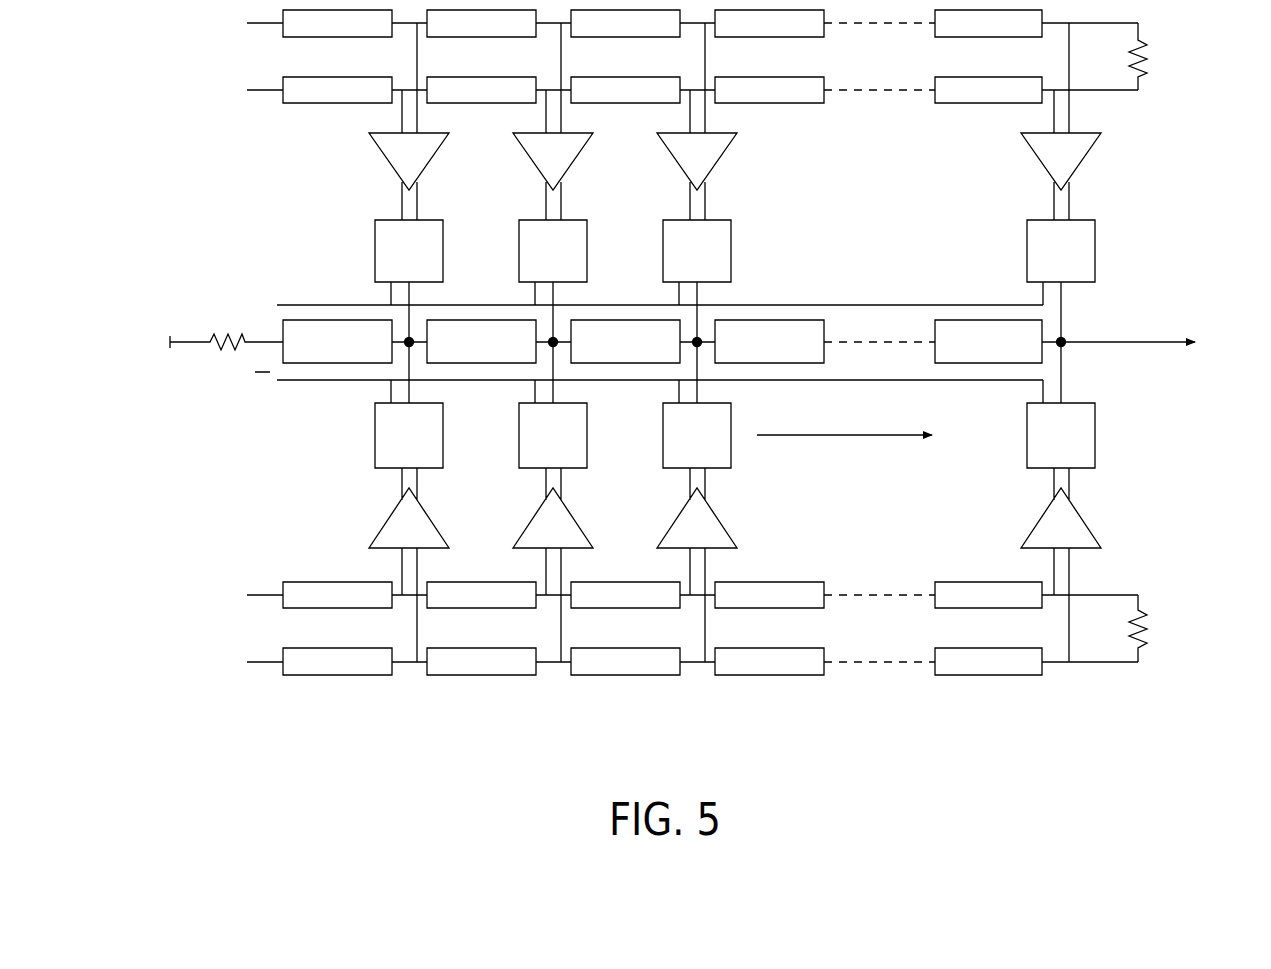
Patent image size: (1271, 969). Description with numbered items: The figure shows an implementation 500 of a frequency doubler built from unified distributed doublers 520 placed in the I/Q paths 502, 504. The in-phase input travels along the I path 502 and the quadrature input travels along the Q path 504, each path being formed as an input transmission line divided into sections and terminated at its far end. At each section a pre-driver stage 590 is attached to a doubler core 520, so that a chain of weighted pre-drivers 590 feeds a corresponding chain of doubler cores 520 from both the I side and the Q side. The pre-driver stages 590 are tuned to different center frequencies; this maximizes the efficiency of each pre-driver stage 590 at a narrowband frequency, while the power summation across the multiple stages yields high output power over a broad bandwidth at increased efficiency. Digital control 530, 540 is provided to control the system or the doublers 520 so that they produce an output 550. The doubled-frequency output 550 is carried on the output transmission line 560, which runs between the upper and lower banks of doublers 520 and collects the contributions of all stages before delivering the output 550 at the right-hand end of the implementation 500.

The implementation 500 is at (687, 397).
The I path 502 is at (182, 100).
The Q path 504 is at (186, 678).
The distributed doubler 520 is at (375, 250).
The digital control 530 is at (245, 305).
The digital control 540 is at (236, 385).
The output 550 is at (1225, 385).
The output transmission line 560 is at (618, 341).
The pre-driver stage 590 is at (386, 157).